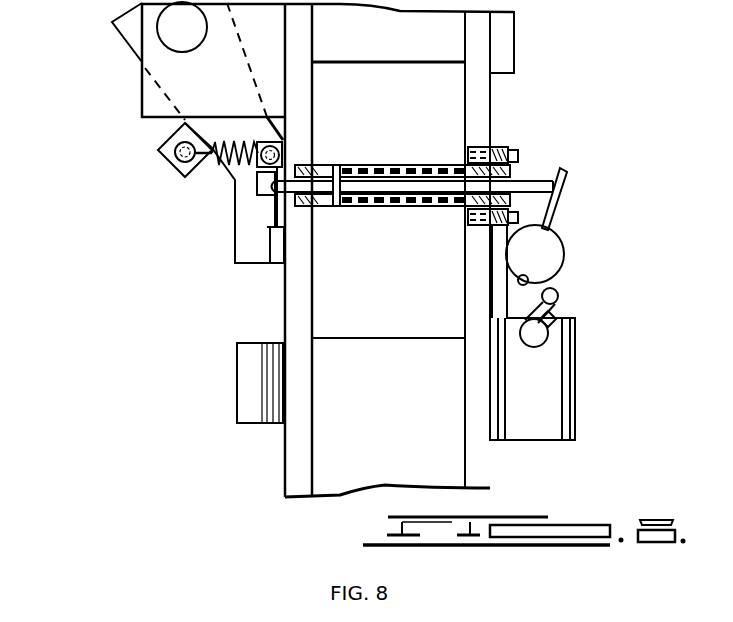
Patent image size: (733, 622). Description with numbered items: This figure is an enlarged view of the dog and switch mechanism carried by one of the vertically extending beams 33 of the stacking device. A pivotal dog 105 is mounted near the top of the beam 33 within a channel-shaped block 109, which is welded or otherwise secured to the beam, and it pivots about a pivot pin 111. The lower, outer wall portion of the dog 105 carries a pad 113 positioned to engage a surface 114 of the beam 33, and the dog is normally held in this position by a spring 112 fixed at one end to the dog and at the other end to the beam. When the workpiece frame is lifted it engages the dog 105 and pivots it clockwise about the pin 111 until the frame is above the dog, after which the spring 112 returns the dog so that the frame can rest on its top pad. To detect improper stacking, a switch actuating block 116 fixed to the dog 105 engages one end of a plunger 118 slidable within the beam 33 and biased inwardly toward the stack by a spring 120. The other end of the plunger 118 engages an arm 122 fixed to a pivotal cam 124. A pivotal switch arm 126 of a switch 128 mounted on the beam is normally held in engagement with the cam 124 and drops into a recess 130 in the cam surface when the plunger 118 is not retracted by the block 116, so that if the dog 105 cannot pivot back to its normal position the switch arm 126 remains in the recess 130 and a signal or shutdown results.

The beam 33 is at (288, 462).
The dog 105 is at (117, 25).
The channel-shaped block 109 is at (142, 93).
The pivot pin 111 is at (180, 52).
The spring 112 is at (233, 142).
The pad 113 is at (273, 265).
The surface 114 is at (277, 313).
The switch actuating block 116 is at (257, 197).
The plunger 118 is at (326, 181).
The spring 120 is at (397, 165).
The arm 122 is at (563, 203).
The pivotal cam 124 is at (565, 245).
The pivotal switch arm 126 is at (556, 297).
The switch 128 is at (545, 373).
The recess 130 is at (537, 266).